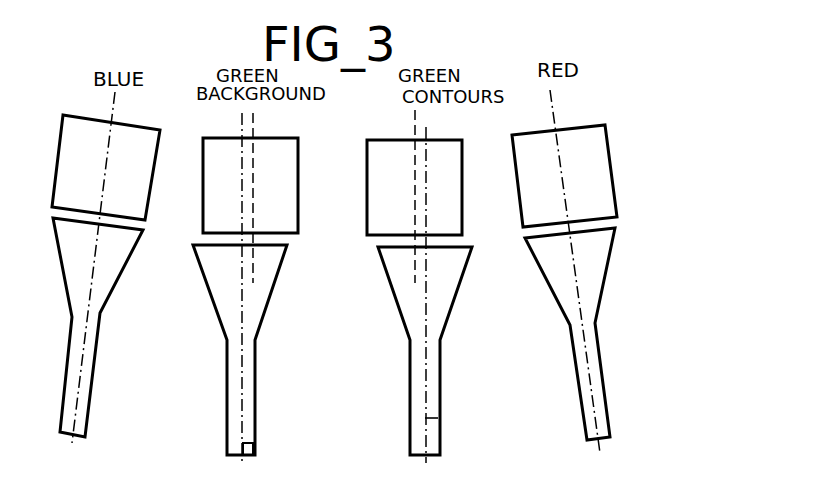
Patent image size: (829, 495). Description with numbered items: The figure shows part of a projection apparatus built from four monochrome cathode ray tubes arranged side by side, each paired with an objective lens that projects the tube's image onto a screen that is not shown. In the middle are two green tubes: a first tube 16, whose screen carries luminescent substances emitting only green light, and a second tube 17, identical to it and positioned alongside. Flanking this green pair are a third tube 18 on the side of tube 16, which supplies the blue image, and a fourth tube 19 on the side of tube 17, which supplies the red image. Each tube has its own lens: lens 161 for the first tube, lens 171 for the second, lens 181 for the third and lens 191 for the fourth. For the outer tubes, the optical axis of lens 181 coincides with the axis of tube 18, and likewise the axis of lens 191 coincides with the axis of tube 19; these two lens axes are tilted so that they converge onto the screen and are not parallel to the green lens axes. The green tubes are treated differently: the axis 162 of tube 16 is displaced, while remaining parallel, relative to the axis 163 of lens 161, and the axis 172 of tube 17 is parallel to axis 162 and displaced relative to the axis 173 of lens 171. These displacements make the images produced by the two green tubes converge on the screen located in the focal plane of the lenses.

The first tube 16 is at (228, 300).
The lens 161 is at (288, 196).
The axis of tube 16 162 is at (252, 443).
The axis of lens 16_1 163 is at (252, 138).
The second tube 17 is at (402, 280).
The lens 171 is at (372, 214).
The axis of tube 17 172 is at (449, 398).
The axis of lens 17_1 173 is at (415, 125).
The third tube 18 is at (110, 279).
The lens 181 is at (77, 142).
The fourth tube 19 is at (573, 348).
The lens 191 is at (573, 133).